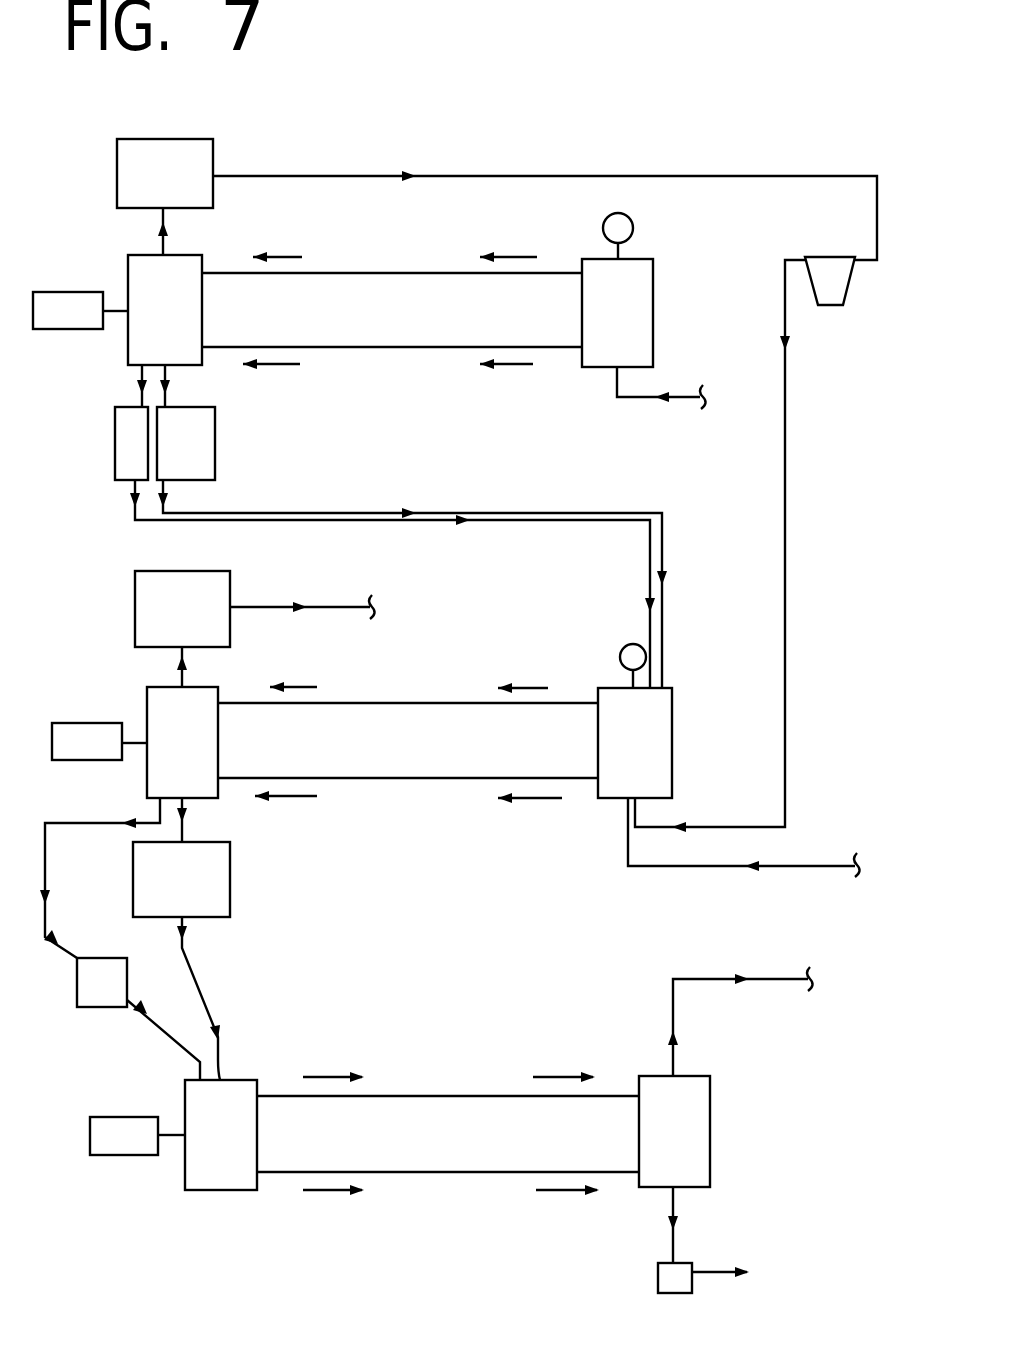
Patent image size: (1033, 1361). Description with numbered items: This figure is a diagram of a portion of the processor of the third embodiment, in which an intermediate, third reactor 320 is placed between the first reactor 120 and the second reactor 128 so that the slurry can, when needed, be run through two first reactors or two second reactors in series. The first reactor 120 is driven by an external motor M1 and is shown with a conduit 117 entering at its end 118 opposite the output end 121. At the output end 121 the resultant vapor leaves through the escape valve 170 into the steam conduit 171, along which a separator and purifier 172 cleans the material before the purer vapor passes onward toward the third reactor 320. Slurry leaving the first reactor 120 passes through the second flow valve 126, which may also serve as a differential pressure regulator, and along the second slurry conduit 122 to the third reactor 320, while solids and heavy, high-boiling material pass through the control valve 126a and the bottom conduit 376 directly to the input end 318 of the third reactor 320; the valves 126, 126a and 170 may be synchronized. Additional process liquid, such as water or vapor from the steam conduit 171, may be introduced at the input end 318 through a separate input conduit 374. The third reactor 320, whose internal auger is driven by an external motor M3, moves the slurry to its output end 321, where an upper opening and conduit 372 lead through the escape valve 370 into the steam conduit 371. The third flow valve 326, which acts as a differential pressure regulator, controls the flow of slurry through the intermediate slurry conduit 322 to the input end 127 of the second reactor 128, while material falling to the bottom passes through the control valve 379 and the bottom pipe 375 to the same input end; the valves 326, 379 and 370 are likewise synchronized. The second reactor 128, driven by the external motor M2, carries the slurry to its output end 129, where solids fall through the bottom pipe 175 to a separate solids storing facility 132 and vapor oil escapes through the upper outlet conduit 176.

The escape valve 170 is at (117, 168).
The steam conduit 171 is at (493, 177).
The separator and purifier 172 is at (835, 291).
The first reactor 120 is at (408, 290).
The inlet unit 118 is at (596, 374).
The feed line 117 is at (680, 392).
The output end 121 is at (212, 362).
The control valve 126a is at (130, 438).
The second flow valve 126 is at (182, 456).
The second slurry conduit 122 is at (230, 512).
The bottom conduit 376 is at (527, 524).
The escape valve 370 is at (148, 598).
The steam conduit 371 is at (342, 607).
The conduit 372 is at (181, 680).
The third reactor 320 is at (423, 722).
The input end 318 is at (612, 806).
The output end 321 is at (230, 797).
The intermediate slurry conduit 322 is at (190, 832).
The third flow valve 326 is at (150, 875).
The bottom pipe 375 is at (43, 882).
The control valve 379 is at (92, 988).
The separate input conduit 374 is at (790, 867).
The input end 127 is at (252, 1069).
The second reactor 128 is at (425, 1113).
The output end 129 is at (657, 1062).
The outlet conduit 176 is at (710, 982).
The bottom pipe 175 is at (676, 1205).
The solids storing facility 132 is at (668, 1280).
The motor M1 is at (48, 314).
The external motor M2 is at (120, 1140).
The external motor M3 is at (67, 742).